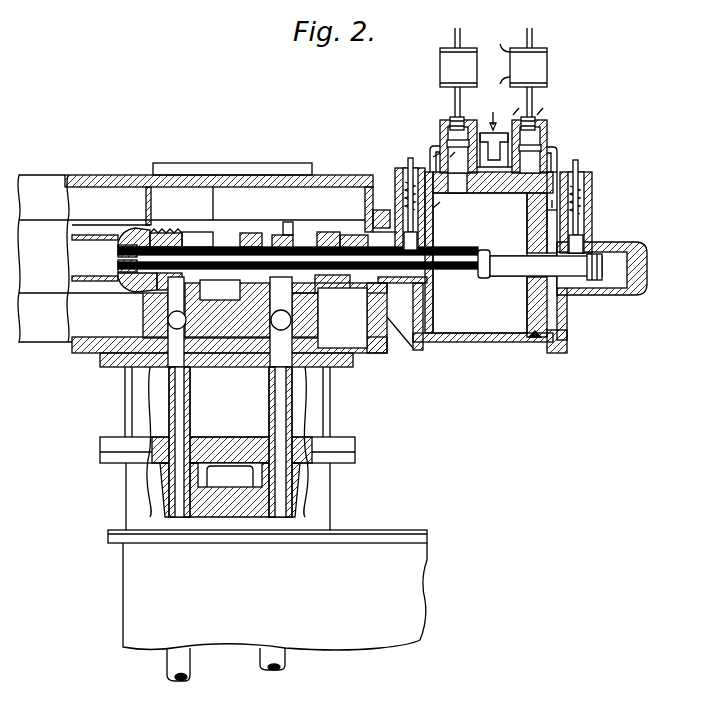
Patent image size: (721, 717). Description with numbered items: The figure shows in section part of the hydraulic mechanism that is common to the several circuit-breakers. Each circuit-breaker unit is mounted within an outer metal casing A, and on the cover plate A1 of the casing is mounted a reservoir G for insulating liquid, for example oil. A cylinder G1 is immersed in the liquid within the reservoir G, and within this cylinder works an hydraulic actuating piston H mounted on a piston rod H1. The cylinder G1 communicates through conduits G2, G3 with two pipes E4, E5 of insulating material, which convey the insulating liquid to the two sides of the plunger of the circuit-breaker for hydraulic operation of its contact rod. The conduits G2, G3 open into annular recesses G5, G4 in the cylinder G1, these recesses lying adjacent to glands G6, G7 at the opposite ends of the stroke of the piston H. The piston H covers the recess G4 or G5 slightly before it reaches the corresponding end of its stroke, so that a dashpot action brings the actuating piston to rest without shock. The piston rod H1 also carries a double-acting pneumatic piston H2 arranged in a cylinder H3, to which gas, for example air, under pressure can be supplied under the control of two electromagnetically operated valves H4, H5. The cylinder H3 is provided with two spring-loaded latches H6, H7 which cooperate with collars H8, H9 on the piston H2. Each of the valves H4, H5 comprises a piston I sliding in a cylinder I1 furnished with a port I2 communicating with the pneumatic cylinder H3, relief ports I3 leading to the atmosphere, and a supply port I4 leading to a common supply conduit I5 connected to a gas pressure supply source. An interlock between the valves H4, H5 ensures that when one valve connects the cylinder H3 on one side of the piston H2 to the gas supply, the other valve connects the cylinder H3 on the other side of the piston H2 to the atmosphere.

The reservoir G is at (100, 175).
The cylinder G1 is at (230, 242).
The conduit G2 is at (292, 302).
The conduit G3 is at (143, 305).
The annular recess G4 is at (178, 243).
The annular recess G5 is at (283, 247).
The gland G6 is at (140, 229).
The gland G7 is at (207, 318).
The hydraulic actuating piston H is at (273, 243).
The piston rod H1 is at (438, 277).
The double-acting pneumatic piston H2 is at (540, 342).
The cylinder H3 is at (473, 342).
The electromagnetically operated valve H4 is at (450, 60).
The electromagnetically operated valve H5 is at (547, 72).
The spring-loaded latch H6 is at (408, 163).
The spring-loaded latch H7 is at (578, 167).
The collar H8 is at (502, 251).
The collar H9 is at (582, 290).
The piston I is at (527, 158).
The cylinder I1 is at (450, 133).
The port I2 is at (556, 148).
The relief port I3 is at (450, 120).
The supply port I4 is at (512, 168).
The common supply conduit I5 is at (490, 168).
The outer metal casing A is at (133, 583).
The cover plate A1 is at (355, 445).
The pipe E4 is at (277, 660).
The pipe E5 is at (168, 670).